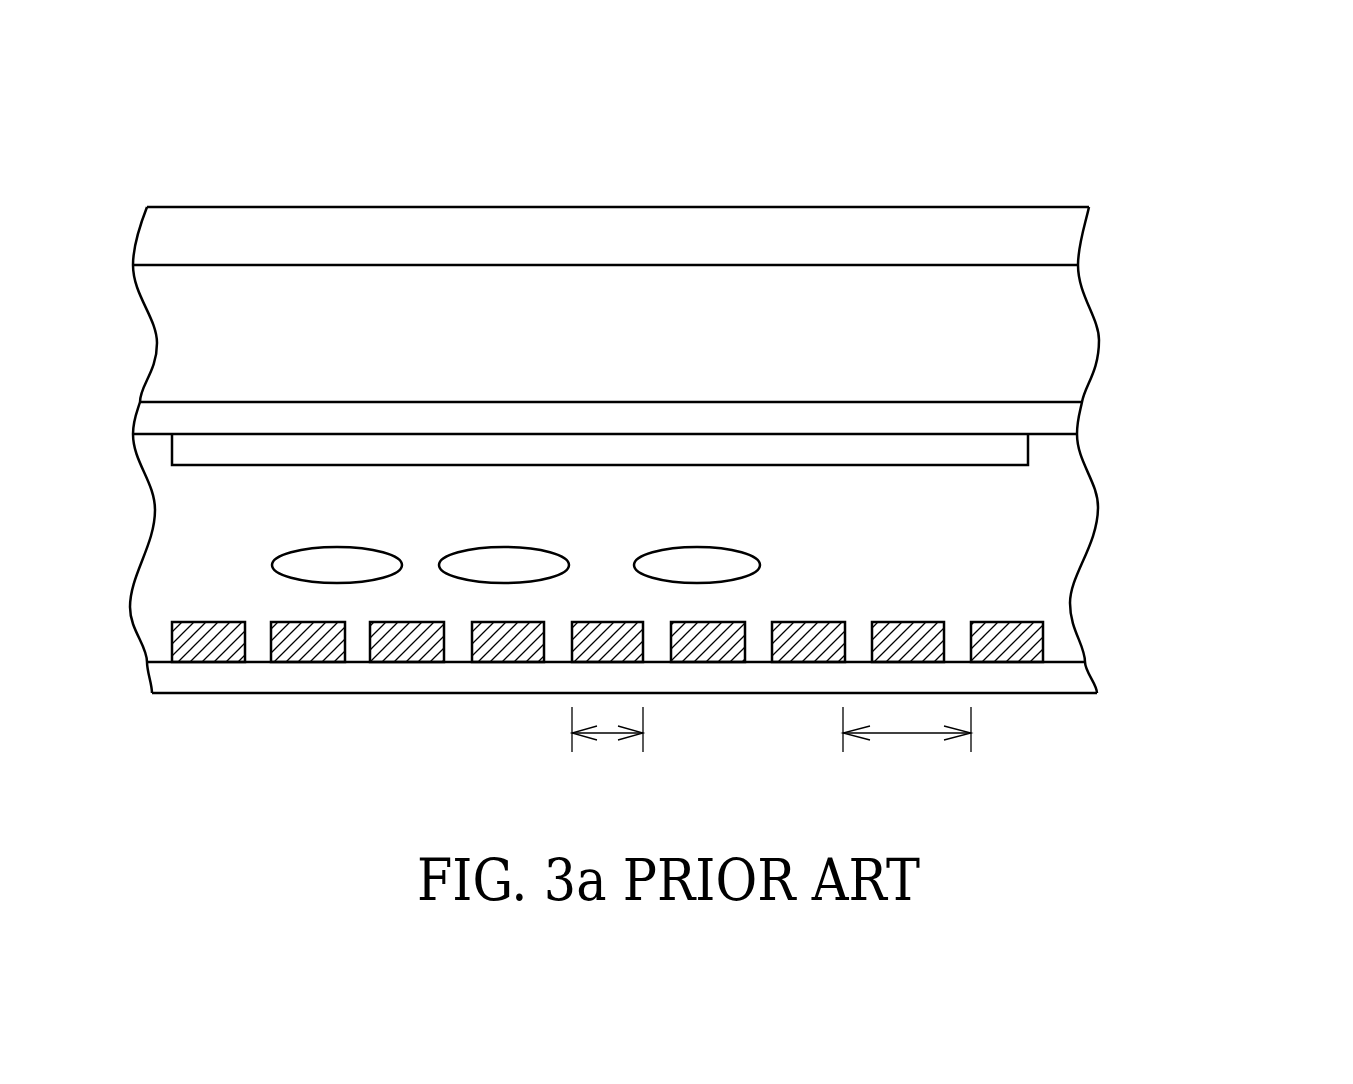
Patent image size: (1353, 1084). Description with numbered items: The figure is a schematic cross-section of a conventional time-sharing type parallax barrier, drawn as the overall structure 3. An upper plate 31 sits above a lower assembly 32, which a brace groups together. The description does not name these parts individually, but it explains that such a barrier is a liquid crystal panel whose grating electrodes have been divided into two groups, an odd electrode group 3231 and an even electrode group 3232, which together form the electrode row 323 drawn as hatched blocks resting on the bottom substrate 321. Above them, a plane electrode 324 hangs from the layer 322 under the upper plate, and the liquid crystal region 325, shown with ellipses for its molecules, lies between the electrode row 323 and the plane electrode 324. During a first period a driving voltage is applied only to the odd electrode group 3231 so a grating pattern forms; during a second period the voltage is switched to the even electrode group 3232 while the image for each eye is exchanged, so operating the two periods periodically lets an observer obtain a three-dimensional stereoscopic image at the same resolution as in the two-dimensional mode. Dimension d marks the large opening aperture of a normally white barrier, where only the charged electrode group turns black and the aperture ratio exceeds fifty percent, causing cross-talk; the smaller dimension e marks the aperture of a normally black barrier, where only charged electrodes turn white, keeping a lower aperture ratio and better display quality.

The liquid crystal display panel 3 is at (1062, 152).
The upper substrate 31 is at (622, 246).
The lower substrate assembly 32 is at (724, 549).
The lower glass substrate 321 is at (677, 688).
The upper layer of lower substrate 322 is at (1067, 417).
The electrodes 323 is at (607, 564).
The odd electrode group 3231 is at (802, 635).
The even electrode group 3232 is at (910, 593).
The common electrode layer 324 is at (1017, 453).
The liquid crystal layer 325 is at (1067, 553).